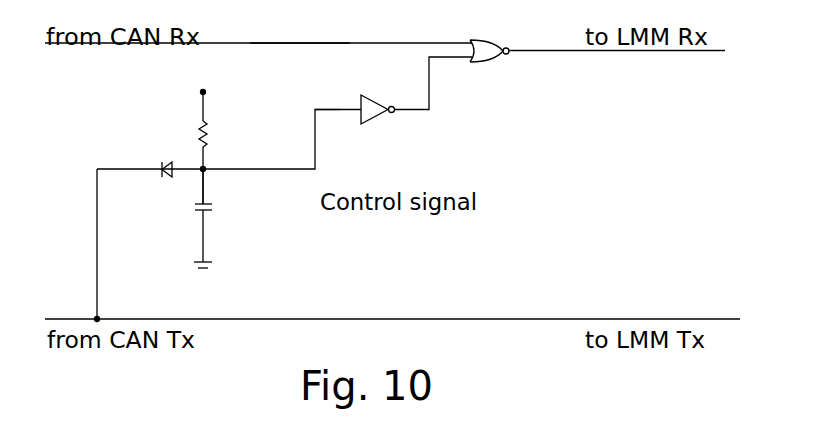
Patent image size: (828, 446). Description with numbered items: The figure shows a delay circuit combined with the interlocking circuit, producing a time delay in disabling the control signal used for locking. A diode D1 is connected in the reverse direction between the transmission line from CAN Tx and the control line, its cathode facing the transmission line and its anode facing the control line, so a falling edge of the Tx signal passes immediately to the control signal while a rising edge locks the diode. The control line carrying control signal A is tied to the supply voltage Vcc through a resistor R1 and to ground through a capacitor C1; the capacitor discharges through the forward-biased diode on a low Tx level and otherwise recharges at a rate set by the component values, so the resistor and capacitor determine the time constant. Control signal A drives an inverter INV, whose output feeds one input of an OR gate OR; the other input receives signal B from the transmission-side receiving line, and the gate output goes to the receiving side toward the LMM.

The resistor R1 is at (221, 162).
The capacitor C1 is at (218, 218).
The diode D1 is at (167, 156).
The inverter INV is at (393, 120).
The OR gate OR is at (489, 67).
The control signal A is at (316, 112).
The transmission-side Rx receiving line signal B is at (300, 30).
The supply voltage Vcc is at (209, 92).